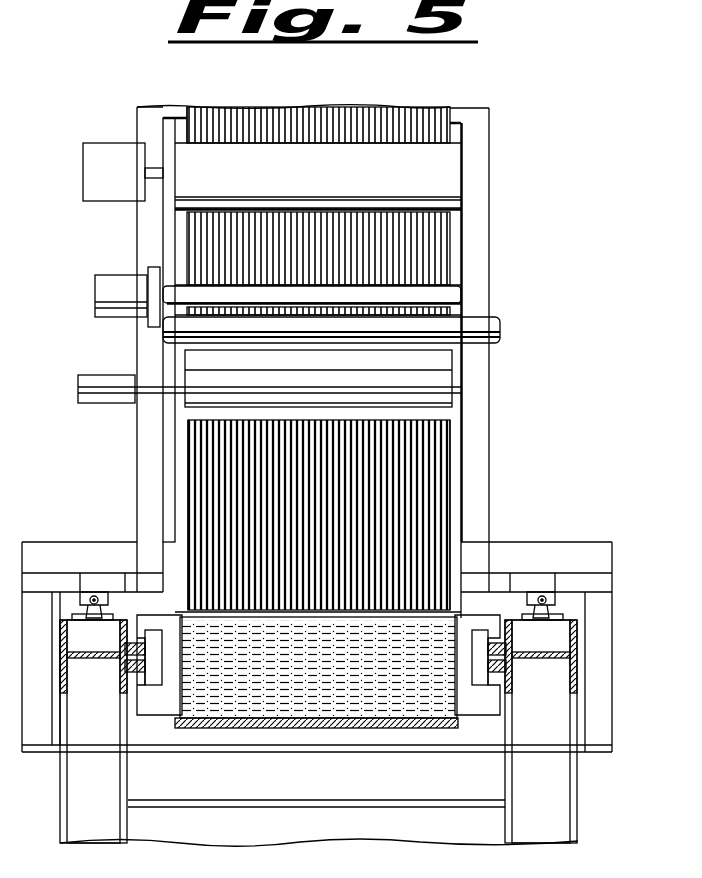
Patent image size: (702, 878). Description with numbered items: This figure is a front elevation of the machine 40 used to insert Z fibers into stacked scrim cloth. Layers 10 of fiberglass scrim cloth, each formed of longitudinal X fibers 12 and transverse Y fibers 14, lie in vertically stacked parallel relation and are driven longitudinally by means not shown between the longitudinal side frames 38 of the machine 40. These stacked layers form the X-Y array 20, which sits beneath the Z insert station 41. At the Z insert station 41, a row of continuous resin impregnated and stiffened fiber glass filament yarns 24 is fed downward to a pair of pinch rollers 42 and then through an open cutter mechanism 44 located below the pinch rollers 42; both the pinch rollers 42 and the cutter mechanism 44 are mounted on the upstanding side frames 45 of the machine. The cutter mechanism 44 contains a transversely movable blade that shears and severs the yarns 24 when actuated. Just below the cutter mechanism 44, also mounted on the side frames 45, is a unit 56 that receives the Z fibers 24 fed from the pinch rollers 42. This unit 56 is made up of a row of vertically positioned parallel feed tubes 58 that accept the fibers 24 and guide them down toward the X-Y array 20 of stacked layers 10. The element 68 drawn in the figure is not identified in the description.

The layers of fiberglass scrim cloth 10 is at (400, 695).
The longitudinal X fibers 12 is at (313, 690).
The transverse Y fibers 14 is at (437, 700).
The X-Y array 20 is at (240, 712).
The fiber glass filament yarns 24 is at (352, 110).
The longitudinal side frames 38 is at (150, 703).
The machine 40 is at (596, 518).
The Z insert station 41 is at (492, 241).
The pinch rollers 42 is at (455, 171).
The cutter mechanism 44 is at (460, 296).
The upstanding side frames 45 is at (136, 458).
The unit 56 is at (482, 404).
The feed tubes 58 is at (393, 500).
The roller 68 is at (490, 330).